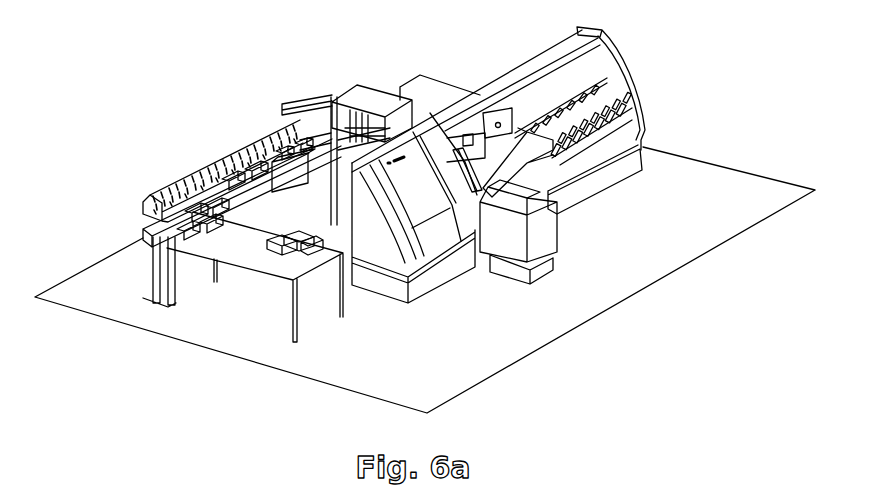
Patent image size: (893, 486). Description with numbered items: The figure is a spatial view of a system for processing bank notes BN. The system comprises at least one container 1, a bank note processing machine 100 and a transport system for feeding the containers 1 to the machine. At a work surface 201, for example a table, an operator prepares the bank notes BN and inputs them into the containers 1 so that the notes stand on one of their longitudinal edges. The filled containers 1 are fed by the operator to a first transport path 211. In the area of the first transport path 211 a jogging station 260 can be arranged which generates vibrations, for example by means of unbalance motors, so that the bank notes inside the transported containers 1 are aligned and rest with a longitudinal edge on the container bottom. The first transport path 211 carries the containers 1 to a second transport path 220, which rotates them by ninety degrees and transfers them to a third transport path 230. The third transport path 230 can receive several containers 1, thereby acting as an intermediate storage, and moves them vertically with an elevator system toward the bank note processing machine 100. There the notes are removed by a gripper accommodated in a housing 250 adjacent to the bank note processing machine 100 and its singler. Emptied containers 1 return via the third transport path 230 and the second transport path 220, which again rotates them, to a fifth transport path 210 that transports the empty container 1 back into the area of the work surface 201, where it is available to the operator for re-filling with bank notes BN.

The bank note processing machine 100 is at (648, 62).
The container 1 is at (229, 125).
The work surface 201 is at (257, 262).
The fifth transport path 210 is at (145, 205).
The first transport path 211 is at (138, 238).
The second transport path 220 is at (298, 102).
The third transport path 230 is at (374, 100).
The housing 250 is at (553, 227).
The jogging station 260 is at (287, 175).
The bank notes BN is at (318, 254).